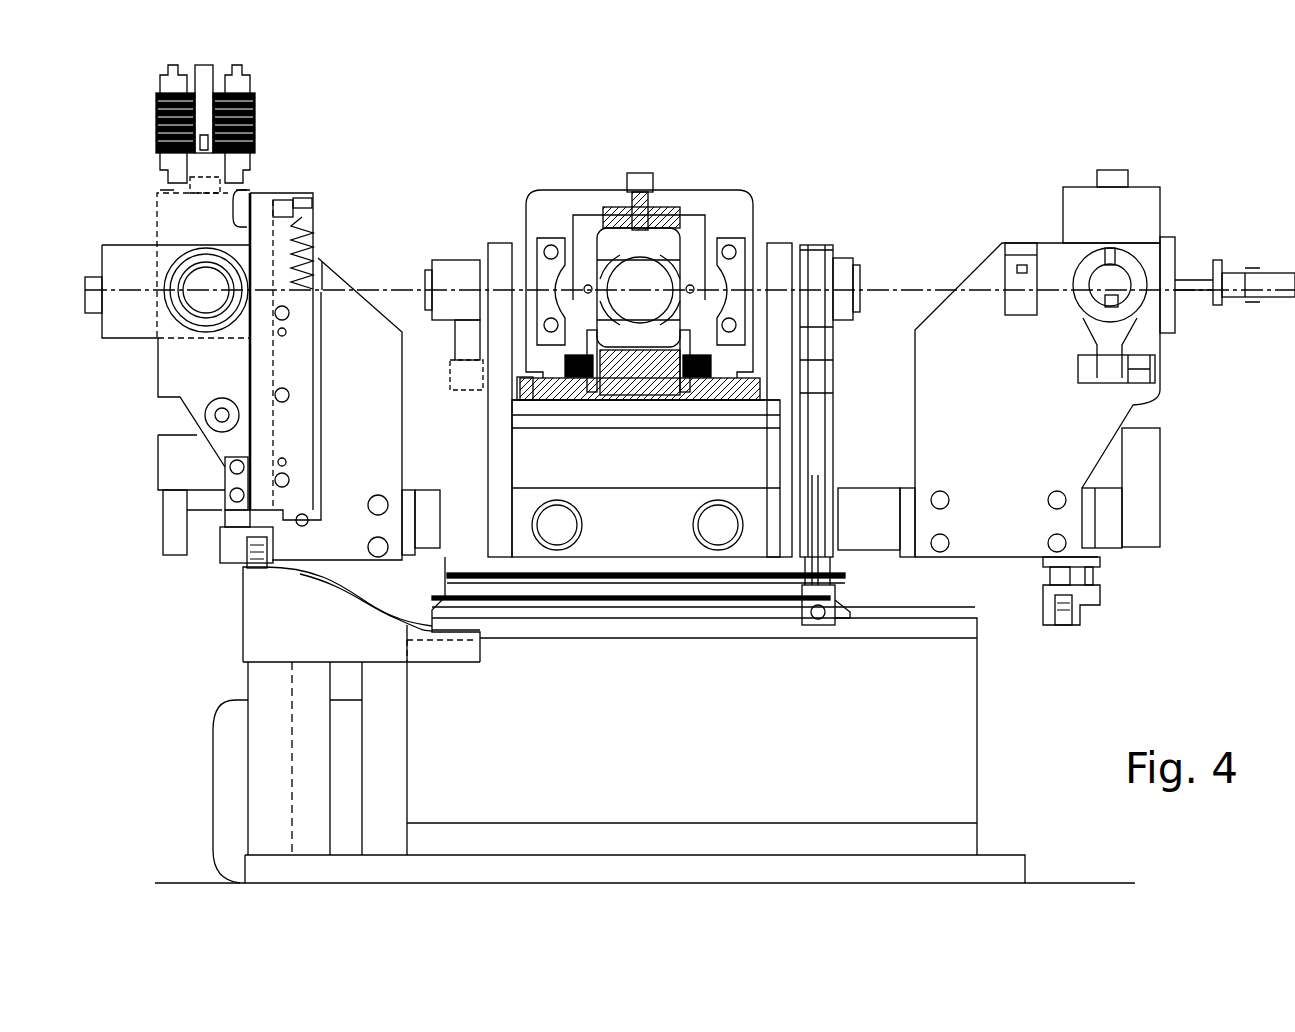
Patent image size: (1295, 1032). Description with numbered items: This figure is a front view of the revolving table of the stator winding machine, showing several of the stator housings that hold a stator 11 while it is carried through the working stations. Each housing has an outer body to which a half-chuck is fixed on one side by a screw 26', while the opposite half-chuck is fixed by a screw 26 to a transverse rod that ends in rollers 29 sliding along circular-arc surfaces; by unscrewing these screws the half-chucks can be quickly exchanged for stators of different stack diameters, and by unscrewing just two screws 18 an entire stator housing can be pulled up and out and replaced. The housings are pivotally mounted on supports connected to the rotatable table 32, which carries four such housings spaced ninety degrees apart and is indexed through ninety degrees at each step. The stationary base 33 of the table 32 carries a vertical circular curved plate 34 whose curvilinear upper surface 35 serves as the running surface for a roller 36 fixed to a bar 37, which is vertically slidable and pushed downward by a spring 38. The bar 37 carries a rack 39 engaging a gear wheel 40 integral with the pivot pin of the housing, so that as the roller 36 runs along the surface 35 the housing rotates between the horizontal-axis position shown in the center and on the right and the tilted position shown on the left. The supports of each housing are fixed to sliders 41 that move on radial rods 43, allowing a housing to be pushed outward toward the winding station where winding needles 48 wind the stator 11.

The stator 11 is at (258, 119).
The screws 18 is at (212, 78).
The rack 39 is at (247, 177).
The gear wheel 40 is at (185, 270).
The spring 38 is at (310, 253).
The bar 37 is at (292, 377).
The rotatable table 32 is at (460, 503).
The sliders 41 is at (408, 510).
The radial rods 43 is at (205, 533).
The roller 36 is at (265, 545).
The curvilinear upper surface 35 is at (357, 597).
The vertical circular curved plate 34 is at (273, 627).
The stationary base 33 is at (952, 747).
The screw 26' is at (657, 187).
The rollers 29 is at (527, 400).
The screw 26 is at (651, 399).
The winding needles 48 is at (1278, 297).